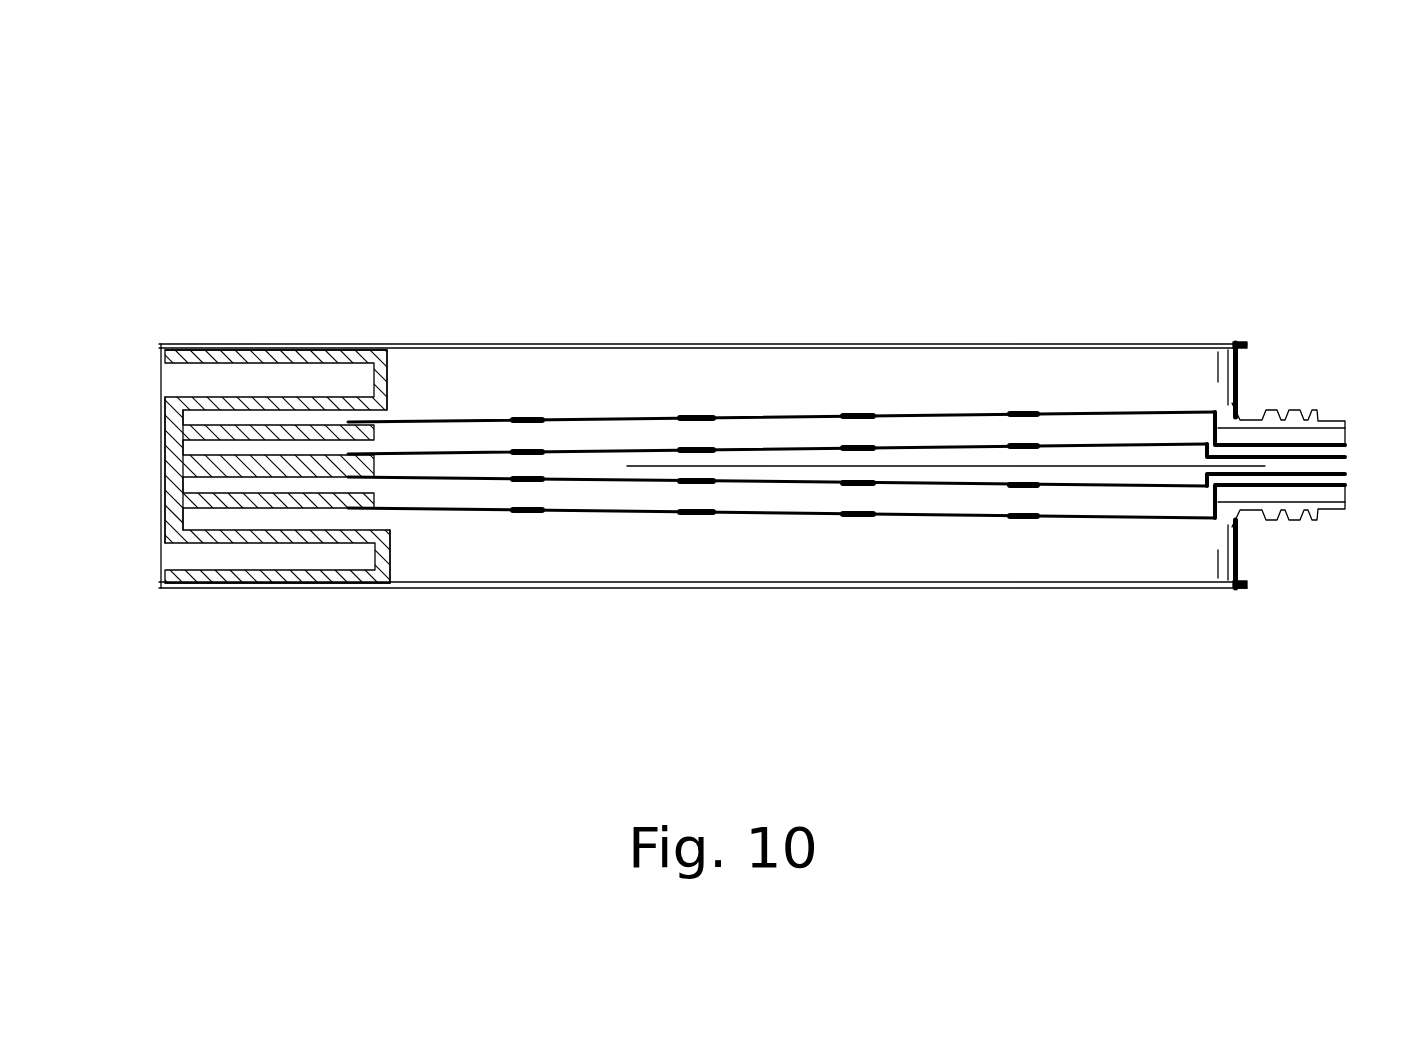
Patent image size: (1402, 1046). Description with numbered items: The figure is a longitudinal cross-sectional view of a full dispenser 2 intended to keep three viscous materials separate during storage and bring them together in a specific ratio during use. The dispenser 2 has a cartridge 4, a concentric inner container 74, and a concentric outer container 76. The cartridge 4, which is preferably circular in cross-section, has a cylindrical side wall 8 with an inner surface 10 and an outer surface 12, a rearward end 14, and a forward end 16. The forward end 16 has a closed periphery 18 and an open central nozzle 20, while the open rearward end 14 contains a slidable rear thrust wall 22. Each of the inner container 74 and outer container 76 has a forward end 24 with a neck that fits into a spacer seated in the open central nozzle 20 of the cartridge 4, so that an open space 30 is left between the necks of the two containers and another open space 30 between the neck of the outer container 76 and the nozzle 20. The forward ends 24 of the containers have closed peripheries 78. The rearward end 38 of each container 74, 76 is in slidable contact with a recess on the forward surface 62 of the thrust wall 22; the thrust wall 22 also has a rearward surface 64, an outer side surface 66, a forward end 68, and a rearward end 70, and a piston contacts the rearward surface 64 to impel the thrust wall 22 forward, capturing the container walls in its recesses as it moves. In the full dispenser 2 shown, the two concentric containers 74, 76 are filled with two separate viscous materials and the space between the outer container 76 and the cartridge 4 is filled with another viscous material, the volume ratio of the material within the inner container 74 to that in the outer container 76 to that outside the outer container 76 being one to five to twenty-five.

The dispenser 2 is at (716, 226).
The cartridge 4 is at (587, 338).
The cylindrical side wall 8 is at (1033, 338).
The inner surface 10 is at (650, 578).
The outer surface 12 is at (727, 592).
The rearward end 14 is at (168, 590).
The forward end 16 is at (1228, 592).
The closed periphery 18 is at (1249, 551).
The open central nozzle 20 is at (1287, 424).
The thrust wall 22 is at (253, 463).
The forward end 24 is at (1168, 522).
The open space 30 is at (1301, 498).
The rearward end 38 is at (397, 548).
The forward surface 62 is at (389, 377).
The rearward surface 64 is at (158, 462).
The outer side surface 66 is at (278, 587).
The forward end 68 is at (367, 344).
The rearward end 70 is at (168, 525).
The inner container 74 is at (763, 444).
The outer container 76 is at (940, 411).
The closed periphery 78 is at (1197, 452).